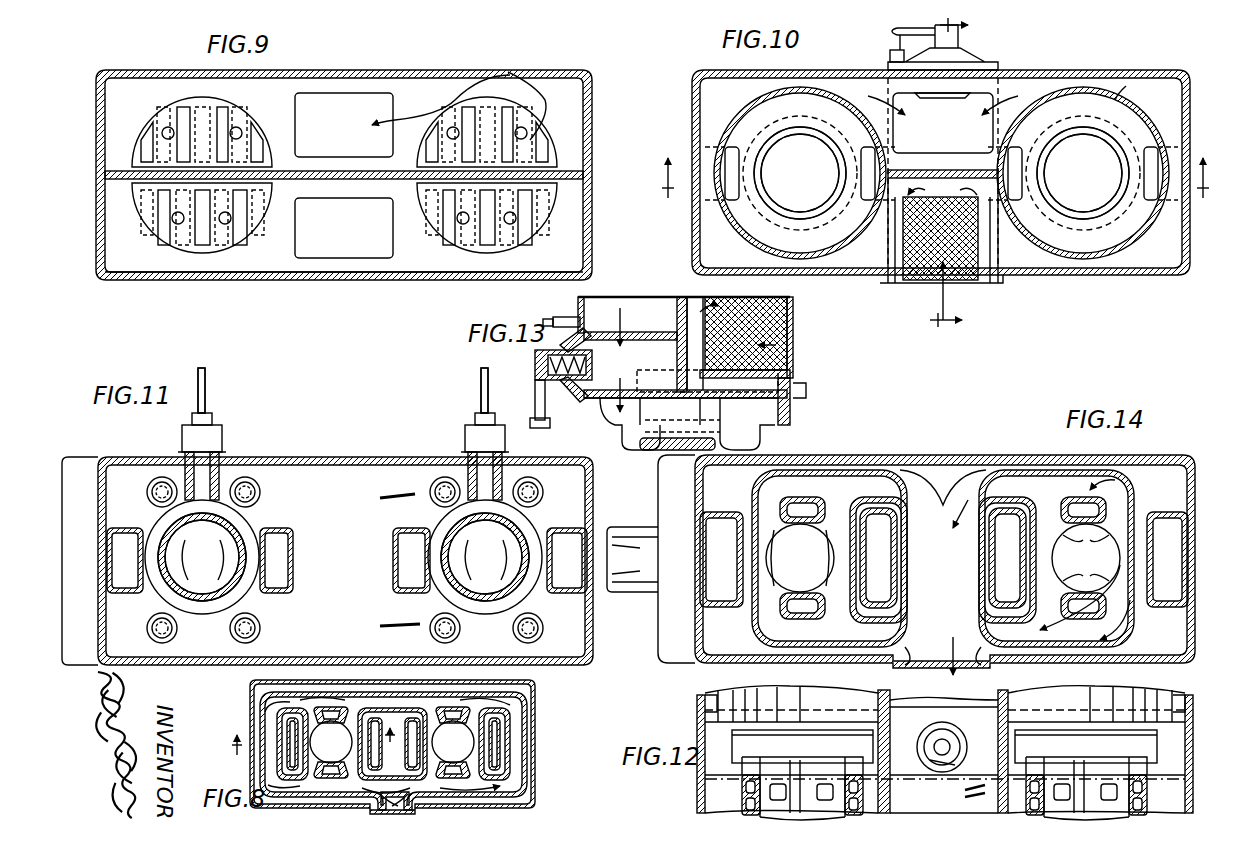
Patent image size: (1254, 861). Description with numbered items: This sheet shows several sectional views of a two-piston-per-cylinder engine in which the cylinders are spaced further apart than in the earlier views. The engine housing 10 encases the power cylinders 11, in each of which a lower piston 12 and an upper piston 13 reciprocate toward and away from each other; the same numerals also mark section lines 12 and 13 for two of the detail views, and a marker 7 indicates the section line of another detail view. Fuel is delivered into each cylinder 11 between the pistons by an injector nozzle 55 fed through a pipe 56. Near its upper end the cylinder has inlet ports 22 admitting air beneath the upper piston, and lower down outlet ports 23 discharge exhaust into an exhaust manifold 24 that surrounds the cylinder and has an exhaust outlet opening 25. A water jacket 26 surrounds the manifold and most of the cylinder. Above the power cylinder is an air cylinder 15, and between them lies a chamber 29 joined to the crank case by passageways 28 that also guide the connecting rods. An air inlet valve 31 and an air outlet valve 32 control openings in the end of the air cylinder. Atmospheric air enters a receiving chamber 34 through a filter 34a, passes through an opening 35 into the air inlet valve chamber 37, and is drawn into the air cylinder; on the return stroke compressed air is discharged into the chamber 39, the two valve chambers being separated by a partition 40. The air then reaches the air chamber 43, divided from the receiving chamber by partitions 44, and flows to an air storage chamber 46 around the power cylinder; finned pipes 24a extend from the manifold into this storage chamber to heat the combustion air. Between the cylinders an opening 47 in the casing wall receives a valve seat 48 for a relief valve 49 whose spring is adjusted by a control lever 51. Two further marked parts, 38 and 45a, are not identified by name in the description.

In FIG. 8, the section line 7- 7 is at (314, 747).
In FIG. 10, the engine housing 10 is at (1022, 76).
In FIG. 13, the engine housing 10 is at (576, 426).
In FIG. 11, the engine housing 10 is at (575, 667).
In FIG. 14, the engine housing 10 is at (775, 665).
In FIG. 12, the engine housing 10 is at (897, 701).
In FIG. 8, the engine housing 10 is at (254, 735).
In FIG. 10, the power cylinder 11 is at (775, 190).
In FIG. 11, the power cylinder 11 is at (472, 568).
In FIG. 14, the power cylinder 11 is at (944, 584).
In FIG. 12, the power cylinder 11 is at (944, 746).
In FIG. 8, the power cylinder 11 is at (396, 758).
In FIG. 10, the piston 12 is at (938, 192).
In FIG. 10, the upper power piston 13 is at (959, 177).
In FIG. 10, the air cylinder 15 is at (752, 247).
In FIG. 12, the air cylinder 15 is at (872, 699).
In FIG. 11, the inlet ports 22 is at (220, 532).
In FIG. 12, the inlet ports 22 is at (944, 788).
In FIG. 14, the outlet ports 23 is at (943, 558).
In FIG. 8, the outlet ports 23 is at (392, 742).
In FIG. 14, the exhaust manifold 24 is at (955, 560).
In FIG. 8, the exhaust manifold 24 is at (380, 700).
In FIG. 11, the pipes 24a is at (230, 630).
In FIG. 14, the exhaust outlet opening 25 is at (938, 656).
In FIG. 8, the exhaust outlet opening 25 is at (406, 812).
In FIG. 11, the water jacket 26 is at (248, 530).
In FIG. 14, the water jacket 26 is at (1160, 630).
In FIG. 8, the water jacket 26 is at (262, 712).
In FIG. 10, the passageways 28 is at (732, 172).
In FIG. 11, the passageways 28 is at (128, 533).
In FIG. 14, the passageways 28 is at (944, 560).
In FIG. 8, the passageways 28 is at (290, 712).
In FIG. 12, the chamber 29 is at (712, 738).
In FIG. 9, the air inlet valve 31 is at (146, 220).
In FIG. 9, the air outlet valve 32 is at (156, 120).
In FIG. 10, the receiving chamber 34 is at (1048, 270).
In FIG. 10, the filter 34a is at (955, 268).
In FIG. 13, the filter 34a is at (815, 348).
In FIG. 9, the opening 35 is at (140, 222).
In FIG. 9, the air inlet valve chamber 37 is at (412, 262).
In FIG. 9, the air passage 38 is at (515, 78).
In FIG. 9, the chamber 39 is at (296, 84).
In FIG. 9, the separating partition 40 is at (322, 170).
In FIG. 9, the air chamber 43 is at (373, 98).
In FIG. 10, the air chamber 43 is at (1128, 85).
In FIG. 10, the partitions 44 is at (943, 165).
In FIG. 14, the partitions 44 is at (1185, 662).
In FIG. 12, the partitions 44 is at (708, 700).
In FIG. 10, the chamber 45a is at (943, 173).
In FIG. 13, the chamber 45a is at (648, 352).
In FIG. 11, the air storage chamber 46 is at (232, 640).
In FIG. 13, the opening 47 is at (620, 360).
In FIG. 12, the opening 47 is at (925, 744).
In FIG. 10, the valve seat 48 is at (985, 62).
In FIG. 13, the valve seat 48 is at (568, 316).
In FIG. 12, the valve seat 48 is at (960, 748).
In FIG. 12, the relief valve 49 is at (960, 760).
In FIG. 10, the control lever 51 is at (892, 38).
In FIG. 13, the control lever 51 is at (536, 394).
In FIG. 11, the injector nozzle 55 is at (224, 440).
In FIG. 11, the pipe 56 is at (208, 395).